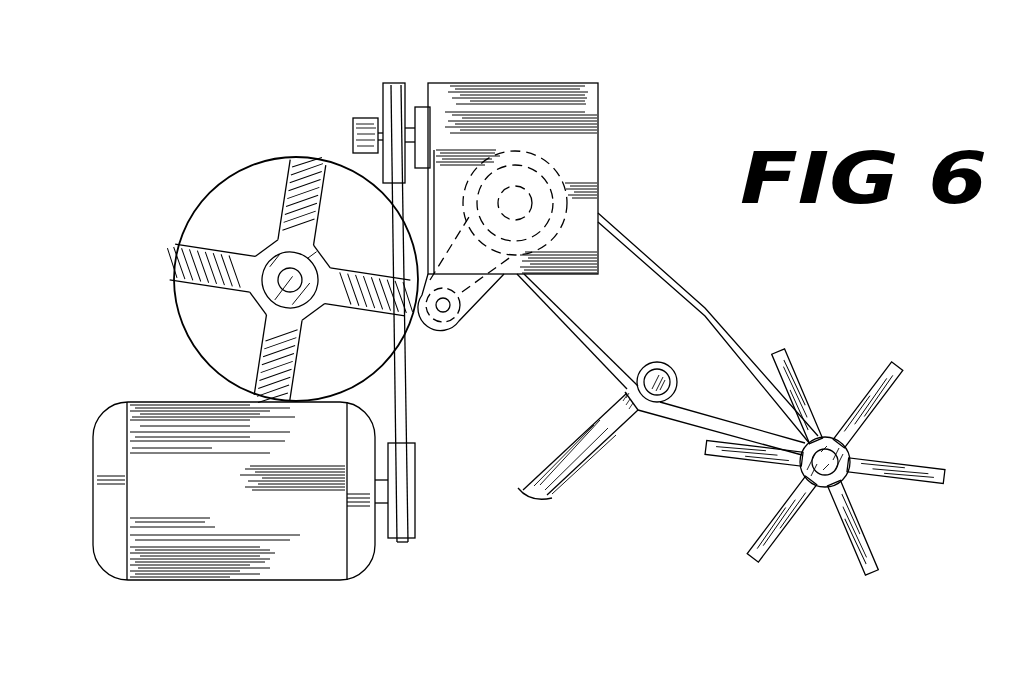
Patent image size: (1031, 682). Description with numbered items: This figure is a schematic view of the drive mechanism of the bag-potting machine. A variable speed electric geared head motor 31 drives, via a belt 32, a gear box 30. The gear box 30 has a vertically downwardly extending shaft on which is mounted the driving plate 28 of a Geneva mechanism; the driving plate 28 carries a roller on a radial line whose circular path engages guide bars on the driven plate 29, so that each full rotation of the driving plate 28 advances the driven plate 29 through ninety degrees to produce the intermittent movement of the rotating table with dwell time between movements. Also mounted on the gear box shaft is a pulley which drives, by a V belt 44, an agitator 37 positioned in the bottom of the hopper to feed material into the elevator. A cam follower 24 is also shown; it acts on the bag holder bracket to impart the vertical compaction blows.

The cam follower 24 is at (363, 123).
The driving plate 28 is at (468, 292).
The driven plate 29 is at (355, 185).
The gear box 30 is at (585, 120).
The electric motor 31 is at (272, 568).
The belt 32 is at (405, 382).
The agitator 37 is at (923, 482).
The V belt 44 is at (687, 420).